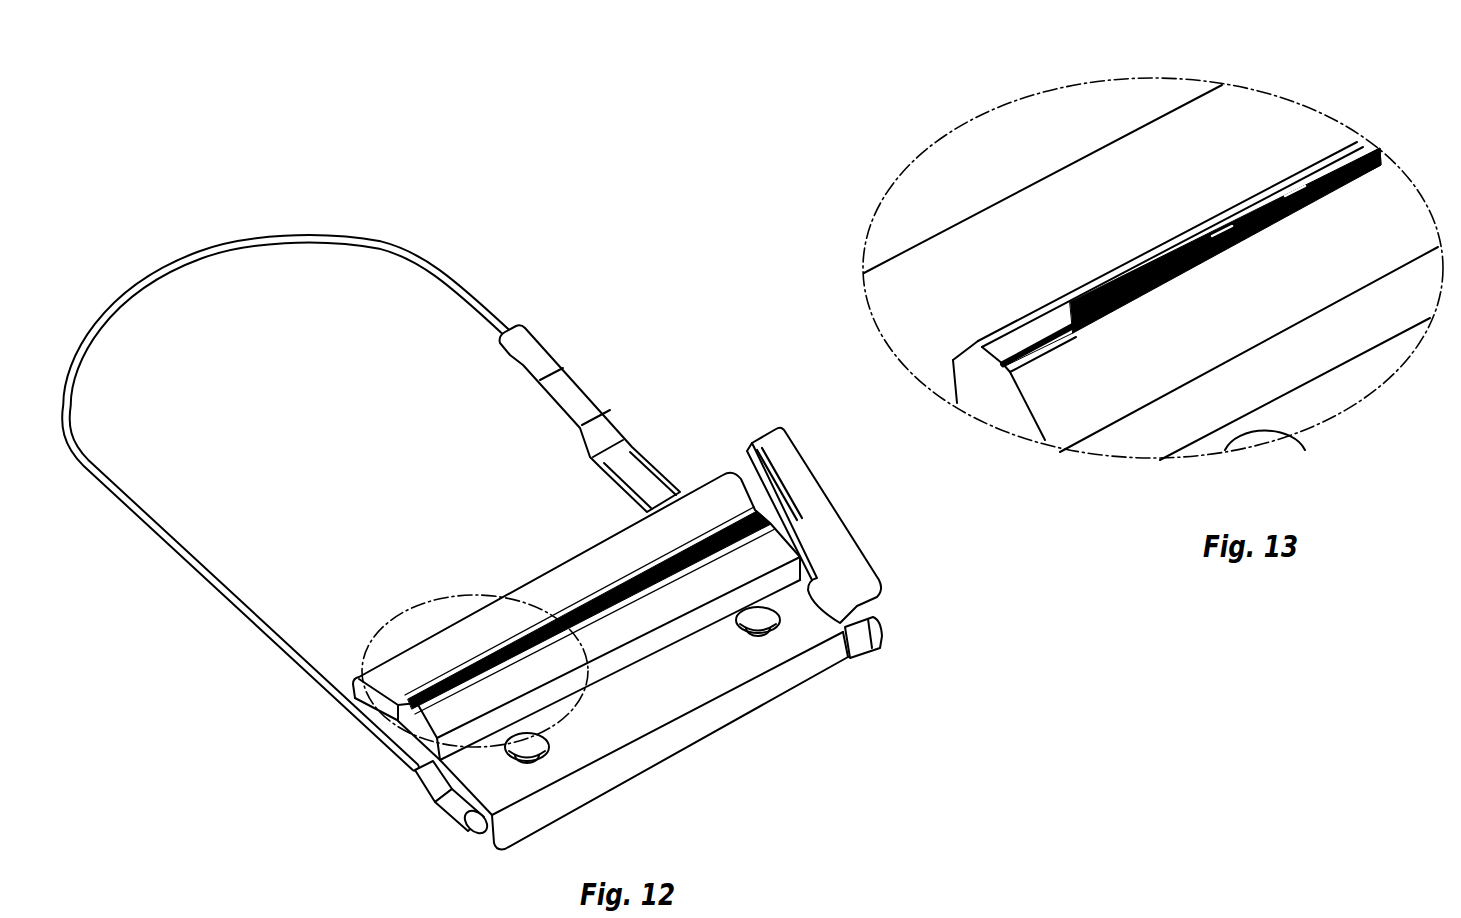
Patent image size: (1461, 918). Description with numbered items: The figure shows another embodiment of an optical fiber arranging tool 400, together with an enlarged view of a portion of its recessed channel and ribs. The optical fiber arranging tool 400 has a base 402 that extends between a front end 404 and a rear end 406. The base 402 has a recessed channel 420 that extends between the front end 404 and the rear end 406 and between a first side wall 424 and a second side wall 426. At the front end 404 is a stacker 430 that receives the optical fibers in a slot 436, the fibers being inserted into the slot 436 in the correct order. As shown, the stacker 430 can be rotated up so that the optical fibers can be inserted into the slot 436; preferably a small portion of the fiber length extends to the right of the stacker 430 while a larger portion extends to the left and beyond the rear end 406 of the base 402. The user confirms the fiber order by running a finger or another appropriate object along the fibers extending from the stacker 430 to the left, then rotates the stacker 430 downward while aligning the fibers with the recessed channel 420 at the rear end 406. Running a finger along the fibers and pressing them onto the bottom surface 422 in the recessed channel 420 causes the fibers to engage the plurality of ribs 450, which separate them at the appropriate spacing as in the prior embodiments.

In FIG. 12, the optical fiber arranging tool 400 is at (648, 318).
In FIG. 13, the optical fiber arranging tool 400 is at (1312, 82).
In FIG. 12, the base 402 is at (635, 622).
In FIG. 13, the base 402 is at (1417, 243).
In FIG. 12, the front end 404 is at (883, 640).
In FIG. 12, the rear end 406 is at (487, 834).
In FIG. 12, the recessed channel 420 is at (727, 523).
In FIG. 13, the recessed channel 420 is at (1066, 332).
In FIG. 13, the bottom surface 422 is at (1035, 330).
In FIG. 13, the first side wall 424 is at (1207, 262).
In FIG. 13, the second side wall 426 is at (1170, 243).
In FIG. 12, the stacker 430 is at (872, 562).
In FIG. 12, the slot 436 is at (786, 482).
In FIG. 13, the plurality of ribs 450 is at (1380, 150).